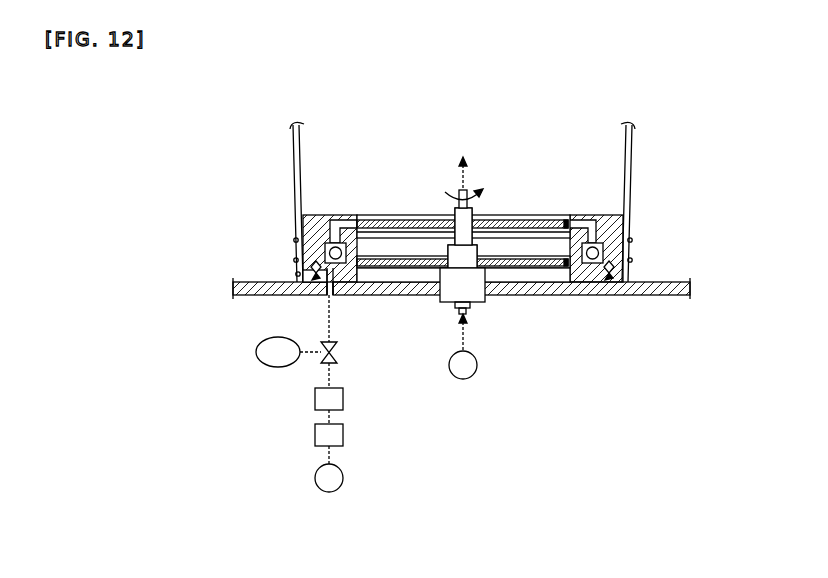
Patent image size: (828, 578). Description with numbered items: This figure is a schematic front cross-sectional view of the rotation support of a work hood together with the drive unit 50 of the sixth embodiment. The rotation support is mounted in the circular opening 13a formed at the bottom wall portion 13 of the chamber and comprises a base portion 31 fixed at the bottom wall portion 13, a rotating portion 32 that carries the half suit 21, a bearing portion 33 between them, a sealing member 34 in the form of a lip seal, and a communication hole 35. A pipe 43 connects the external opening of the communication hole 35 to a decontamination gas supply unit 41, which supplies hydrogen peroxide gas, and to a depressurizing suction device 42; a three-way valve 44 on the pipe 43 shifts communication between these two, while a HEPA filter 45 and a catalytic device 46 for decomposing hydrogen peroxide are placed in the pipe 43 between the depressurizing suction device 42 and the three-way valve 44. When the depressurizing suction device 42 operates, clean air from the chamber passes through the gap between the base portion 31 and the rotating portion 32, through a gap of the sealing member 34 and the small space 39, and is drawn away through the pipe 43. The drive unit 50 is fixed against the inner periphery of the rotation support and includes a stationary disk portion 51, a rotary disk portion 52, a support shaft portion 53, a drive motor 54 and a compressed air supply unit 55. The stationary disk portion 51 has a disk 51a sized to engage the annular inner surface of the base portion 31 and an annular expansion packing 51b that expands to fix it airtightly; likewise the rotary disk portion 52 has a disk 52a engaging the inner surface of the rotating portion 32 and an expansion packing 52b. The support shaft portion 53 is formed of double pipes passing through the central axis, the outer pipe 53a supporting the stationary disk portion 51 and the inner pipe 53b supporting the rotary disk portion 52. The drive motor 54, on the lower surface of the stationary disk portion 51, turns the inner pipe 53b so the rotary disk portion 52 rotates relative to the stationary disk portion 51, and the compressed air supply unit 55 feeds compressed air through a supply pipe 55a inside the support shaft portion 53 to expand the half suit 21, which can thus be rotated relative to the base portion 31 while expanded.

The bottom wall portion 13 is at (648, 291).
The circular opening 13a is at (543, 373).
The half suit 21 is at (295, 159).
The base portion 31 is at (357, 272).
The rotating portion 32 is at (318, 217).
The bearing portion 33 is at (349, 250).
The sealing member 34 is at (293, 250).
The communication hole 35 is at (340, 312).
The small space 39 is at (344, 286).
The decontamination gas supply unit 41 is at (256, 353).
The depressurizing suction device 42 is at (315, 478).
The pipe 43 is at (326, 305).
The three-way valve 44 is at (320, 358).
The HEPA filter 45 is at (315, 399).
The catalytic device 46 is at (315, 435).
The drive unit 50 is at (523, 156).
The stationary disk portion 51 is at (403, 258).
The disk 51a is at (530, 264).
The expansion packing 51b is at (567, 264).
The rotary disk portion 52 is at (366, 217).
The disk 52a is at (510, 220).
The expansion packing 52b is at (567, 220).
The support shaft portion 53 is at (437, 252).
The outer pipe 53a is at (478, 250).
The inner pipe 53b is at (452, 215).
The drive motor 54 is at (474, 303).
The compressed air supply unit 55 is at (473, 376).
The supply pipe 55a is at (470, 190).